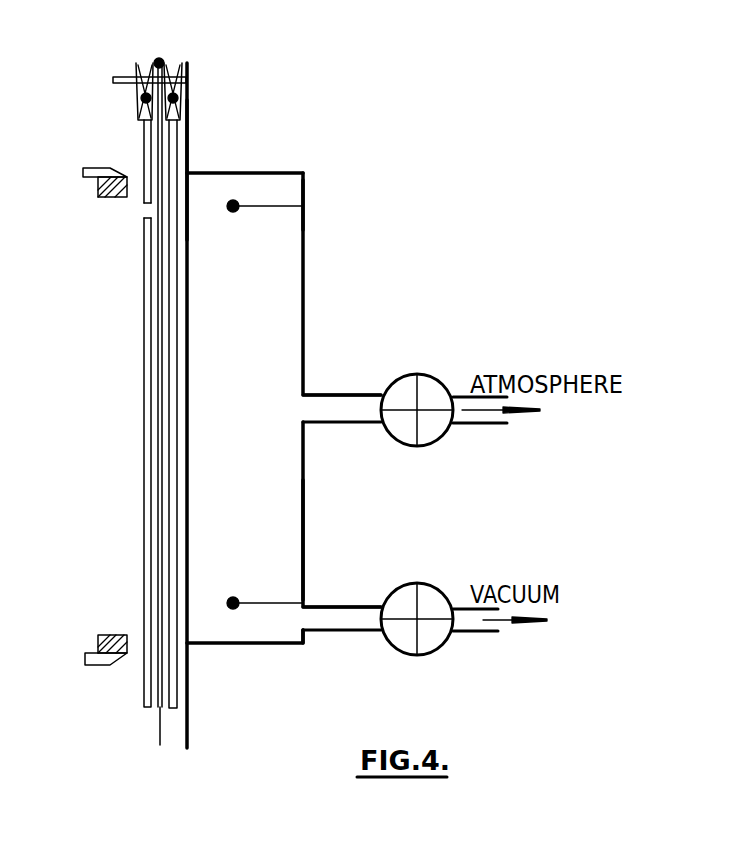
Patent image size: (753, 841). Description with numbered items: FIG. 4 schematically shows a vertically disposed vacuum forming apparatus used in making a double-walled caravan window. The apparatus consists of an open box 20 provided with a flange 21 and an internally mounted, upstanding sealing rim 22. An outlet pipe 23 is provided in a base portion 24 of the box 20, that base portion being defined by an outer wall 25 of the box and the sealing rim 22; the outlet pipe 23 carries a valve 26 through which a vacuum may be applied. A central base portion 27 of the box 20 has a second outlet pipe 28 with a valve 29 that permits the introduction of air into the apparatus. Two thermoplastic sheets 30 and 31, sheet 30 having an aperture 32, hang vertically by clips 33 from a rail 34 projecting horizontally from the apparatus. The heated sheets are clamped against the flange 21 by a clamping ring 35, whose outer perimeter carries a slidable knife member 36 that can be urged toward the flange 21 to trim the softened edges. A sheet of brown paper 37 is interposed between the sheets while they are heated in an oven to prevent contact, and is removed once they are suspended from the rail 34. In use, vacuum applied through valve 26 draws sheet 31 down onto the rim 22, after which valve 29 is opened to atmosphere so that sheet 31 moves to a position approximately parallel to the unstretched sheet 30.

The open box 20 is at (314, 338).
The flange 21 is at (195, 162).
The sealing rim 22 is at (262, 212).
The outlet pipe 23 is at (357, 633).
The base portion 24 is at (307, 197).
The outer wall 25 is at (253, 172).
The valve 26 is at (437, 643).
The central base portion 27 is at (307, 532).
The outlet pipe 28 is at (333, 425).
The valve 29 is at (430, 386).
The thermoplastic sheet 30 is at (145, 340).
The thermoplastic sheet 31 is at (176, 405).
The aperture 32 is at (147, 212).
The clips 33 is at (182, 60).
The rail 34 is at (112, 79).
The clamping ring 35 is at (98, 192).
The knife member 36 is at (83, 172).
The sheet of brown paper 37 is at (162, 727).